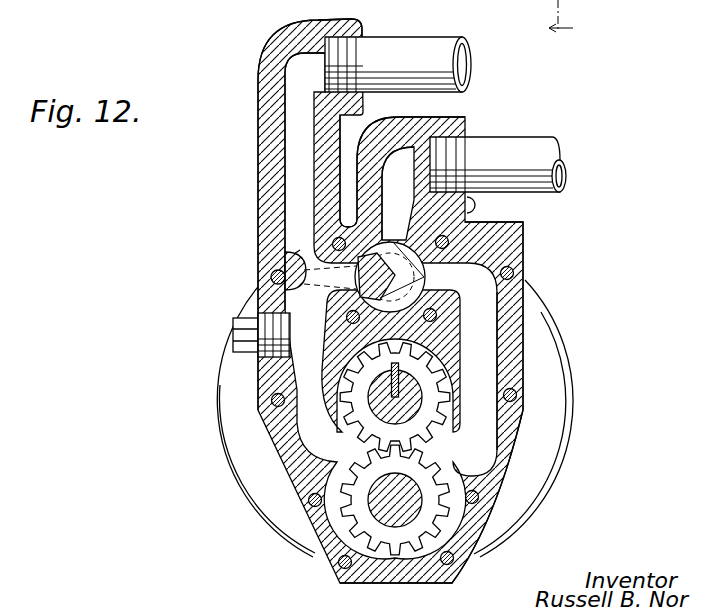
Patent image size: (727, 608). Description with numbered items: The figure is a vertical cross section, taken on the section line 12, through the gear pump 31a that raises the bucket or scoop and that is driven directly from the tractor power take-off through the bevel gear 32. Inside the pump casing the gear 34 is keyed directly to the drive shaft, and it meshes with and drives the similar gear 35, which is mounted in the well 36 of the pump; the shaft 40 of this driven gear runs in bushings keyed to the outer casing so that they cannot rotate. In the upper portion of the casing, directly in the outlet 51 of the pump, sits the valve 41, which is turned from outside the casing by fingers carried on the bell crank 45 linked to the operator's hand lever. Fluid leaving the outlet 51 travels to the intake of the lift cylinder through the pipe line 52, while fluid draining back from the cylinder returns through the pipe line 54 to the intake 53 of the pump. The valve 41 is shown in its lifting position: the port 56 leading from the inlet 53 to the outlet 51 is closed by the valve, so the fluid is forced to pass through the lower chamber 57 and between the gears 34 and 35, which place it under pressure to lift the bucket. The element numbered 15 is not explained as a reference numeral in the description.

The pump unit 15 is at (440, 2).
The gear 35 is at (590, 0).
The section line 12 is at (559, 31).
The pipe line 54 is at (413, 30).
The intake 53 is at (262, 126).
The outlet 51 is at (460, 118).
The pipe line 52 is at (533, 143).
The bell crank 45 is at (473, 205).
The port 56 is at (365, 268).
The valve 41 is at (427, 278).
The pump 31a is at (510, 308).
The gear 34 is at (430, 398).
The bevel gear 32 is at (430, 398).
The lower chamber 57 is at (318, 440).
The shaft 40 is at (380, 490).
The well 36 is at (443, 523).